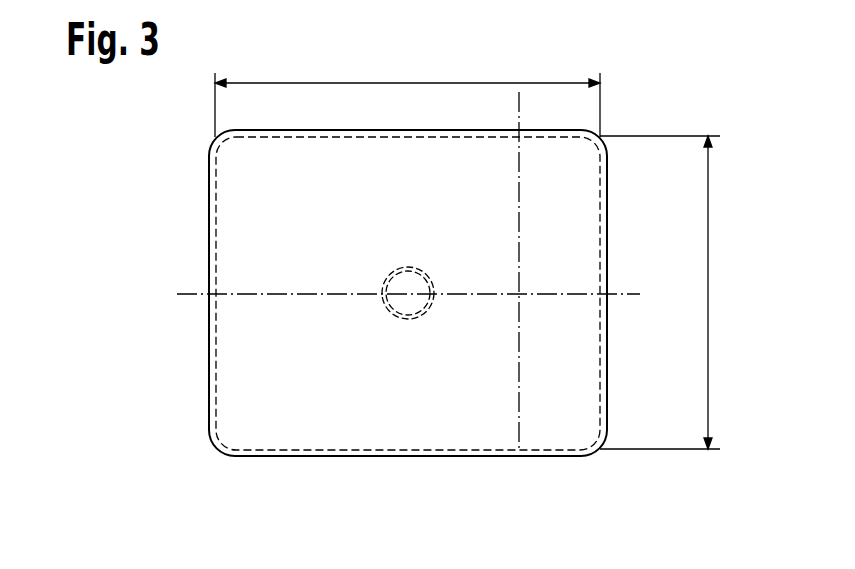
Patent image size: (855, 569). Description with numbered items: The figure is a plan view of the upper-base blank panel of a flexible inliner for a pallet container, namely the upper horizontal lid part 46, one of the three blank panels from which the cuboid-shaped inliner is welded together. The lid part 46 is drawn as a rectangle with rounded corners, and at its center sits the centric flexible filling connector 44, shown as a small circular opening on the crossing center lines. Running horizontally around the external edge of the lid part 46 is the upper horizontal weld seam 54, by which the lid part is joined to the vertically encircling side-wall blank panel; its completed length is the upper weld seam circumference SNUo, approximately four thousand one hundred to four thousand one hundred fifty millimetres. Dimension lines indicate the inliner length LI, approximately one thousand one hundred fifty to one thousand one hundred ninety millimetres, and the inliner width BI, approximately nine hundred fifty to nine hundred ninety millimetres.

The flexible filling connector 44 is at (400, 302).
The upper horizontal lid part 46 is at (277, 237).
The upper horizontal weld seam 54 is at (213, 356).
The upper weld seam circumference SNUo is at (438, 450).
The length of the inliner LI is at (407, 95).
The width of the inliner BI is at (660, 292).